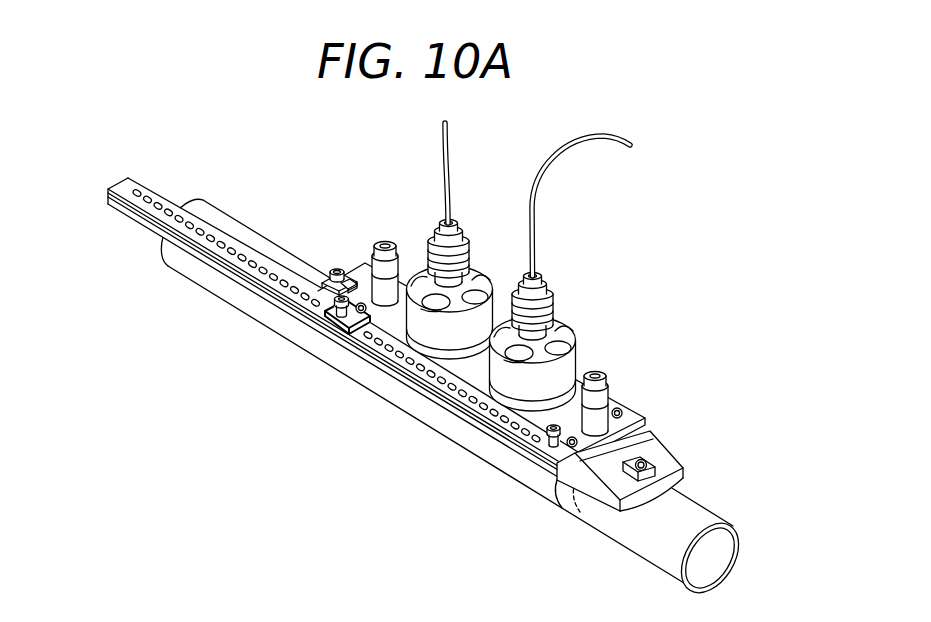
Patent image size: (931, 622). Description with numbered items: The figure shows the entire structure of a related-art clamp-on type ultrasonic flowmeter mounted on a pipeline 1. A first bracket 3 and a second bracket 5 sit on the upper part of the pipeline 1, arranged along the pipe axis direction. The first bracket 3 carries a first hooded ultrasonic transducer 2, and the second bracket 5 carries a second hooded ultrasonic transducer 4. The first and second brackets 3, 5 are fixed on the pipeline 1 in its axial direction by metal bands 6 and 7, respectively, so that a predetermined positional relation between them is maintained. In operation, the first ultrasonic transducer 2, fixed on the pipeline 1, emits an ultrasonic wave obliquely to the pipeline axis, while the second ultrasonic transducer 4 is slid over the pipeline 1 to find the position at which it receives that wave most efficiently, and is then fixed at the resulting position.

The pipeline 1 is at (700, 517).
The first hooded ultrasonic transducer 2 is at (500, 367).
The first bracket 3 is at (620, 483).
The second hooded ultrasonic transducer 4 is at (423, 327).
The second bracket 5 is at (328, 292).
The metal band 6 is at (567, 488).
The metal band 7 is at (343, 335).